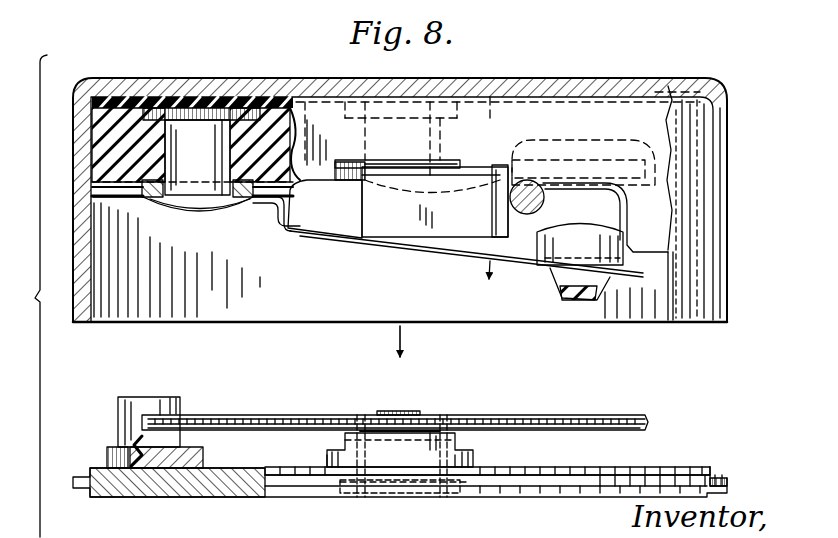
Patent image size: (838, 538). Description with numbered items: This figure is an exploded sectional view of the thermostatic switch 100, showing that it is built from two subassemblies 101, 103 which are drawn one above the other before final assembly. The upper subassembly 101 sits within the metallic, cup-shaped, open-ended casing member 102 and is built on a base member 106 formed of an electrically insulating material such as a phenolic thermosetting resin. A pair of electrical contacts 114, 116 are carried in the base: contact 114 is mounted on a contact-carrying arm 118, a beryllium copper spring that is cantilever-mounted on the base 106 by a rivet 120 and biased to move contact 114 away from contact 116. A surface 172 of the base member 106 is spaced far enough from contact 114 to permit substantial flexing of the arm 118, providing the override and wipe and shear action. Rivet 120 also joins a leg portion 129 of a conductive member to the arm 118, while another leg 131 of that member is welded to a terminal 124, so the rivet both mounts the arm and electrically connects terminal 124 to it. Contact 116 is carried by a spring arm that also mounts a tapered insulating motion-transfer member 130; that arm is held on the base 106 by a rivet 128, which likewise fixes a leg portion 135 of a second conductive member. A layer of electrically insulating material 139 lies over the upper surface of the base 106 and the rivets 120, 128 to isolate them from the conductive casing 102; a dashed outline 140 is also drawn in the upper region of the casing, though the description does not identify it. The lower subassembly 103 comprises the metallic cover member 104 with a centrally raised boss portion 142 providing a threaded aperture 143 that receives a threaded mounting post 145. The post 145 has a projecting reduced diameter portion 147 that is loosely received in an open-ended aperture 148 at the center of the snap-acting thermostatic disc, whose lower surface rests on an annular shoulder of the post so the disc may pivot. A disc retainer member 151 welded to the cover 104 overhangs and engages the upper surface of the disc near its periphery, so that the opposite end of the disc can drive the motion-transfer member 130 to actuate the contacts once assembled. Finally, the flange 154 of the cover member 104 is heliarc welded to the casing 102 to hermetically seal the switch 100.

The switch 100 is at (30, 287).
The subassembly 101 is at (663, 66).
The casing member 102 is at (715, 86).
The subassembly 103 is at (701, 410).
The cover member 104 is at (652, 476).
The base member 106 is at (116, 112).
The electrical contact 114 is at (597, 185).
The electrical contact 116 is at (552, 260).
The contact-carrying arm 118 is at (465, 161).
The rivet 120 is at (418, 140).
The terminal 124 is at (541, 205).
The rivet 128 is at (205, 126).
The leg portion 129 is at (352, 183).
The motion-transfer member 130 is at (585, 297).
The leg 131 is at (500, 222).
The leg portion 135 is at (259, 198).
The layer of electrically insulating material 139 is at (160, 110).
The cover outline 140 is at (386, 101).
The boss portion 142 is at (345, 448).
The threaded aperture 143 is at (473, 460).
The threaded mounting post 145 is at (438, 442).
The reduced diameter portion 147 is at (388, 412).
The aperture 148 is at (425, 420).
The disc retainer member 151 is at (124, 411).
The flange 154 is at (727, 479).
The surface 172 is at (577, 141).